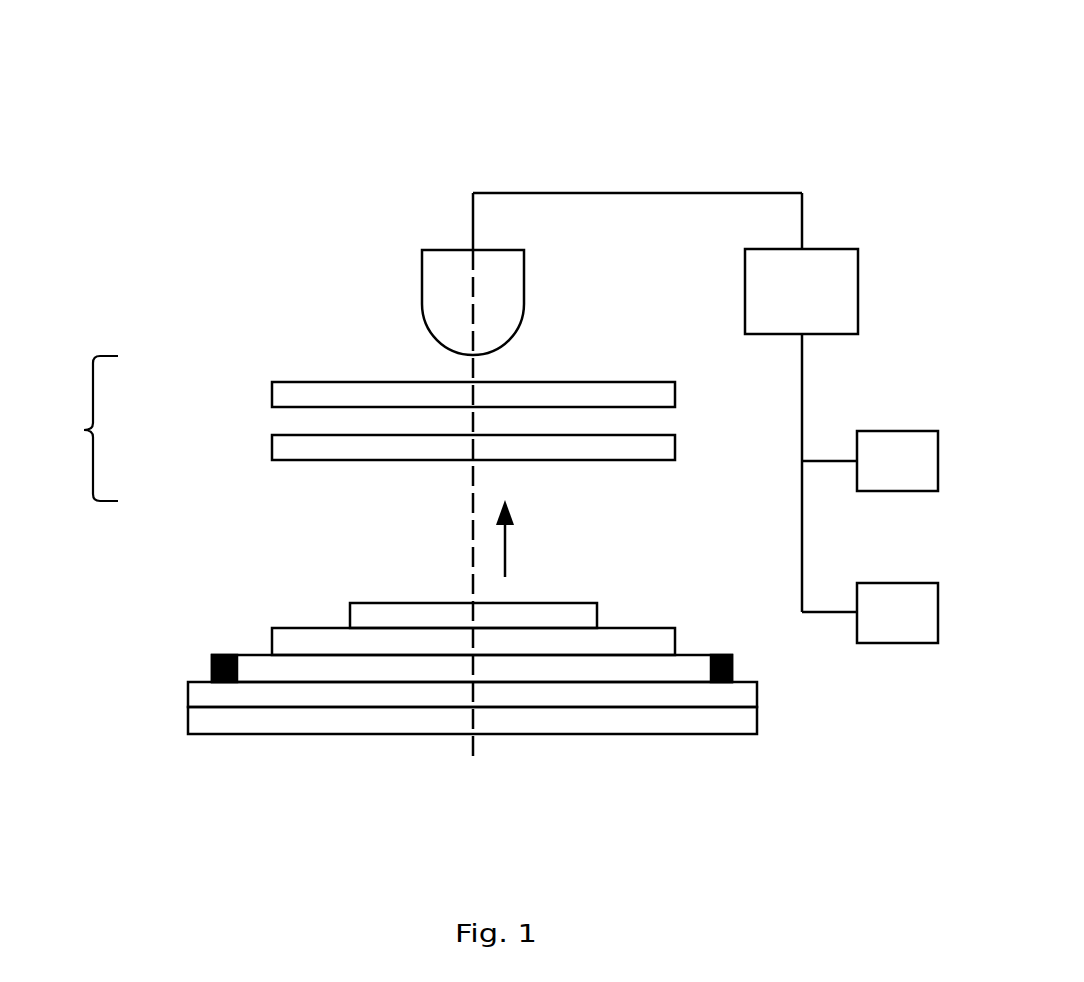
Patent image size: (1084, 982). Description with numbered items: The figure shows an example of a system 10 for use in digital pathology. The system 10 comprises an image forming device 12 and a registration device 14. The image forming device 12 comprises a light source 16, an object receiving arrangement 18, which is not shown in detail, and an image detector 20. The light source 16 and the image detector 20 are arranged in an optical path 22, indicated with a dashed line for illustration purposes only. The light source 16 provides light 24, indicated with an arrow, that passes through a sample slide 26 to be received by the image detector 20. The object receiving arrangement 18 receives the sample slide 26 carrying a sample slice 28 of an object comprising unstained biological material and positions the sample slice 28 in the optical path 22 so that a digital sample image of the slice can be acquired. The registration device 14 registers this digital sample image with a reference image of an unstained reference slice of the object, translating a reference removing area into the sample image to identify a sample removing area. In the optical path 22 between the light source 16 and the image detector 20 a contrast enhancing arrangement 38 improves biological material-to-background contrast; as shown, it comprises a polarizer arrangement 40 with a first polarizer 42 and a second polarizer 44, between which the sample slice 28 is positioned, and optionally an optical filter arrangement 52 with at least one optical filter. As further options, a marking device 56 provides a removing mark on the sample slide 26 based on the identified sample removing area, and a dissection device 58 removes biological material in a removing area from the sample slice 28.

The system 10 is at (796, 128).
The image forming device 12 is at (142, 283).
The registration device 14 is at (858, 290).
The light source 16 is at (188, 722).
The object receiving arrangement 18 is at (720, 655).
The image detector 20 is at (422, 292).
The optical path 22 is at (473, 515).
The light 24 is at (505, 555).
The sample slide 26 is at (272, 640).
The sample slice 28 is at (362, 603).
The contrast enhancing arrangement 38 is at (80, 428).
The polarizer arrangement 40 is at (206, 522).
The first polarizer 42 is at (188, 688).
The second polarizer 44 is at (272, 445).
The optical filter arrangement 52 is at (246, 389).
The marking device 56 is at (880, 431).
The dissection device 58 is at (878, 583).